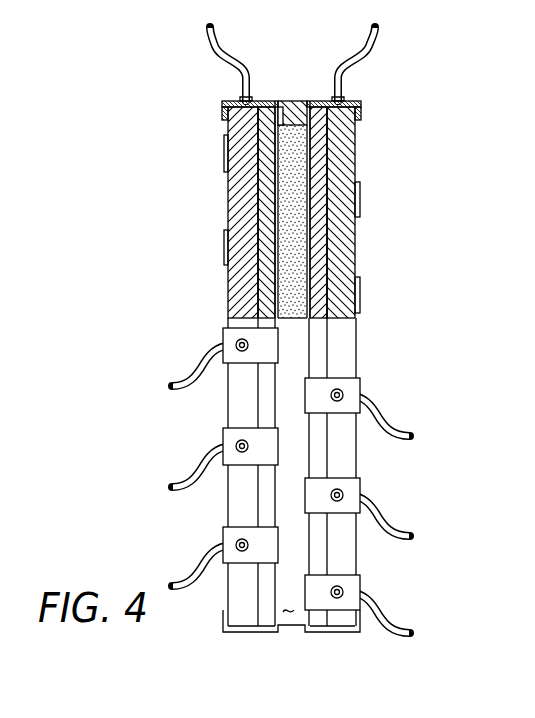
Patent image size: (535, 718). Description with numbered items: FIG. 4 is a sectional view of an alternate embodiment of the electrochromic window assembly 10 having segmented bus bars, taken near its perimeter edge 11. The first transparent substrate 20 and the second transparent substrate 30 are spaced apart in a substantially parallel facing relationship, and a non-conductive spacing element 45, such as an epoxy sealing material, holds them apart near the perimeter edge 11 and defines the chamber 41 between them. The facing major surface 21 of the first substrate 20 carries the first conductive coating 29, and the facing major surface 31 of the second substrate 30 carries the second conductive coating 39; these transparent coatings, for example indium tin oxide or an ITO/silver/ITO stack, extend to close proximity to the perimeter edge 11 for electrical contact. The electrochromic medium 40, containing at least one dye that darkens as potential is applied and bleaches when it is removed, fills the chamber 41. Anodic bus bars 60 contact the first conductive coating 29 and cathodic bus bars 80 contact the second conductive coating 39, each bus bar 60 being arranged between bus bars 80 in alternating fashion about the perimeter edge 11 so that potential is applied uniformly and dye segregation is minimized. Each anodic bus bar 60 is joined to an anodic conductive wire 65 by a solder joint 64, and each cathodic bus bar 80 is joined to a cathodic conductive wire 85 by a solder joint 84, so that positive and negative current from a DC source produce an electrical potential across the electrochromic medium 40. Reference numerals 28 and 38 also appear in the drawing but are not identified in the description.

The electrochromic window assembly 10 is at (157, 86).
The perimeter edge 11 is at (285, 628).
The first transparent substrate 20 is at (218, 209).
The facing major surface 21 is at (278, 178).
The first electrode intermediate layer boundary 28 is at (258, 222).
The first conductive coating 29 is at (262, 201).
The second transparent substrate 30 is at (359, 209).
The facing major surface 31 is at (309, 162).
The inner layer of second electrode 38 is at (328, 145).
The second conductive coating 39 is at (315, 239).
The electrochromic medium 40 is at (302, 297).
The chamber 41 is at (298, 112).
The spacing element 45 is at (286, 104).
The anodic bus bar 60 is at (222, 150).
The solder joint 64 is at (240, 98).
The anodic conductive wire 65 is at (208, 57).
The cathodic bus bar 80 is at (361, 112).
The solder joint 84 is at (345, 98).
The cathodic conductive wire 85 is at (381, 58).